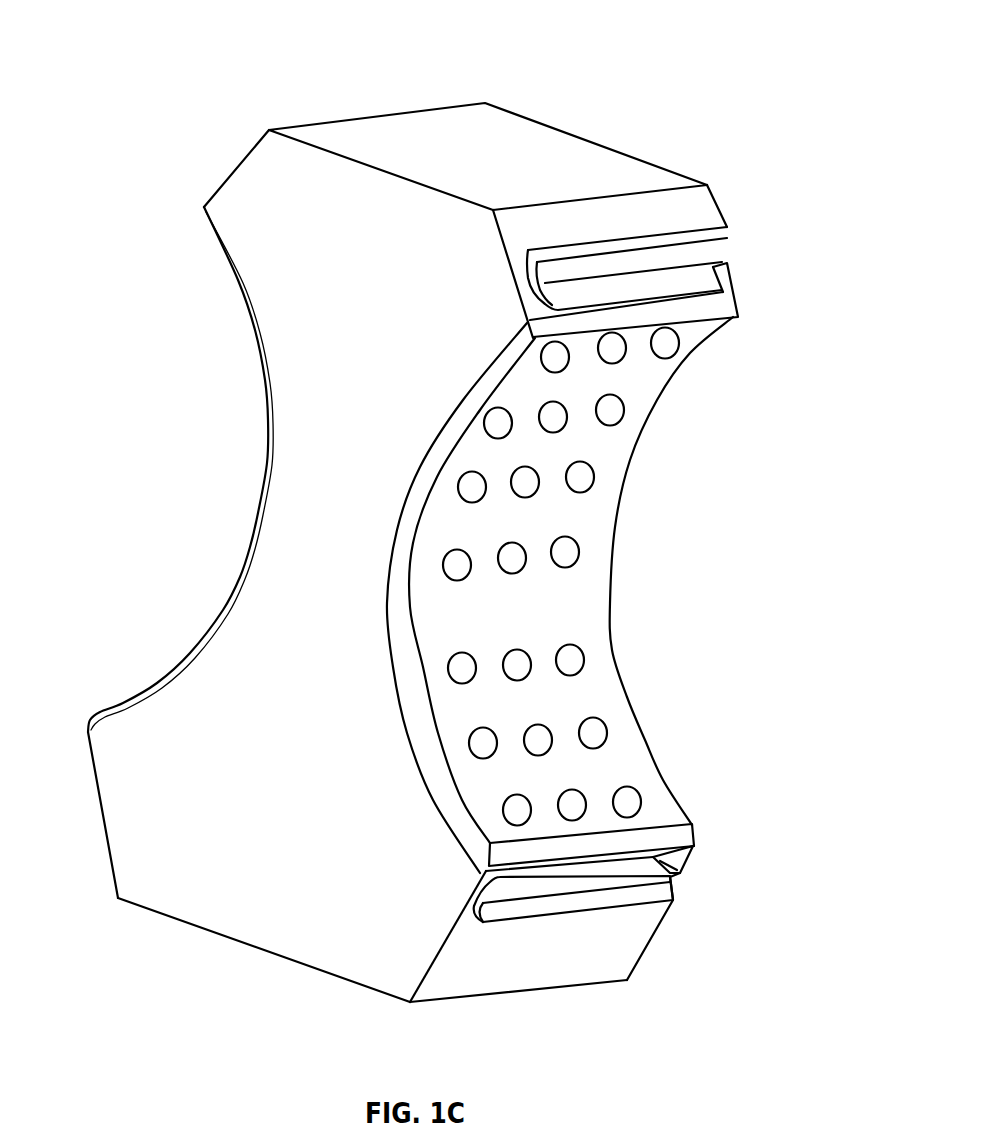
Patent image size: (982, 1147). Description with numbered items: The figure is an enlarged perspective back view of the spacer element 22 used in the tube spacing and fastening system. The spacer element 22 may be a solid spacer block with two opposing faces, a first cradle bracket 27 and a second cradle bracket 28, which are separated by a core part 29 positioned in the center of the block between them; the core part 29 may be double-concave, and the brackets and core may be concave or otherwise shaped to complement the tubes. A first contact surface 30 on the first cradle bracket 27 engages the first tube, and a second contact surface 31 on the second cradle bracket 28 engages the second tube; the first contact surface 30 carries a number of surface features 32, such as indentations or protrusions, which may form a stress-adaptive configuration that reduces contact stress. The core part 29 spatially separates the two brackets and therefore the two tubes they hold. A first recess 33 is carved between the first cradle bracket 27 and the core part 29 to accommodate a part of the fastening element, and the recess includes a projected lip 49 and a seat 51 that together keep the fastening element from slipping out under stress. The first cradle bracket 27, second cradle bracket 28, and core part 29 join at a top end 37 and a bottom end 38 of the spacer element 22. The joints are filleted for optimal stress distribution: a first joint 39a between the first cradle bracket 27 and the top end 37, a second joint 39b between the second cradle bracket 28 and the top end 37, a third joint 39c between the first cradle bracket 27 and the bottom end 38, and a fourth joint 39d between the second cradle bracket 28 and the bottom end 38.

The spacer element 22 is at (118, 33).
The top end 37 is at (566, 157).
The second exemplary joint 39b is at (228, 161).
The first exemplary joint 39a is at (770, 291).
The first recess 33 is at (598, 272).
The seat 51 is at (620, 297).
The projected lip 49 is at (733, 271).
The first contact surface 30 is at (578, 600).
The first cradle bracket 27 is at (657, 795).
The surface features 32 is at (597, 727).
The second contact surface 31 is at (239, 549).
The second cradle bracket 28 is at (125, 689).
The third exemplary joint 39c is at (96, 843).
The core part 29 is at (305, 869).
The bottom end 38 is at (273, 953).
The fourth exemplary joint 39d is at (580, 968).